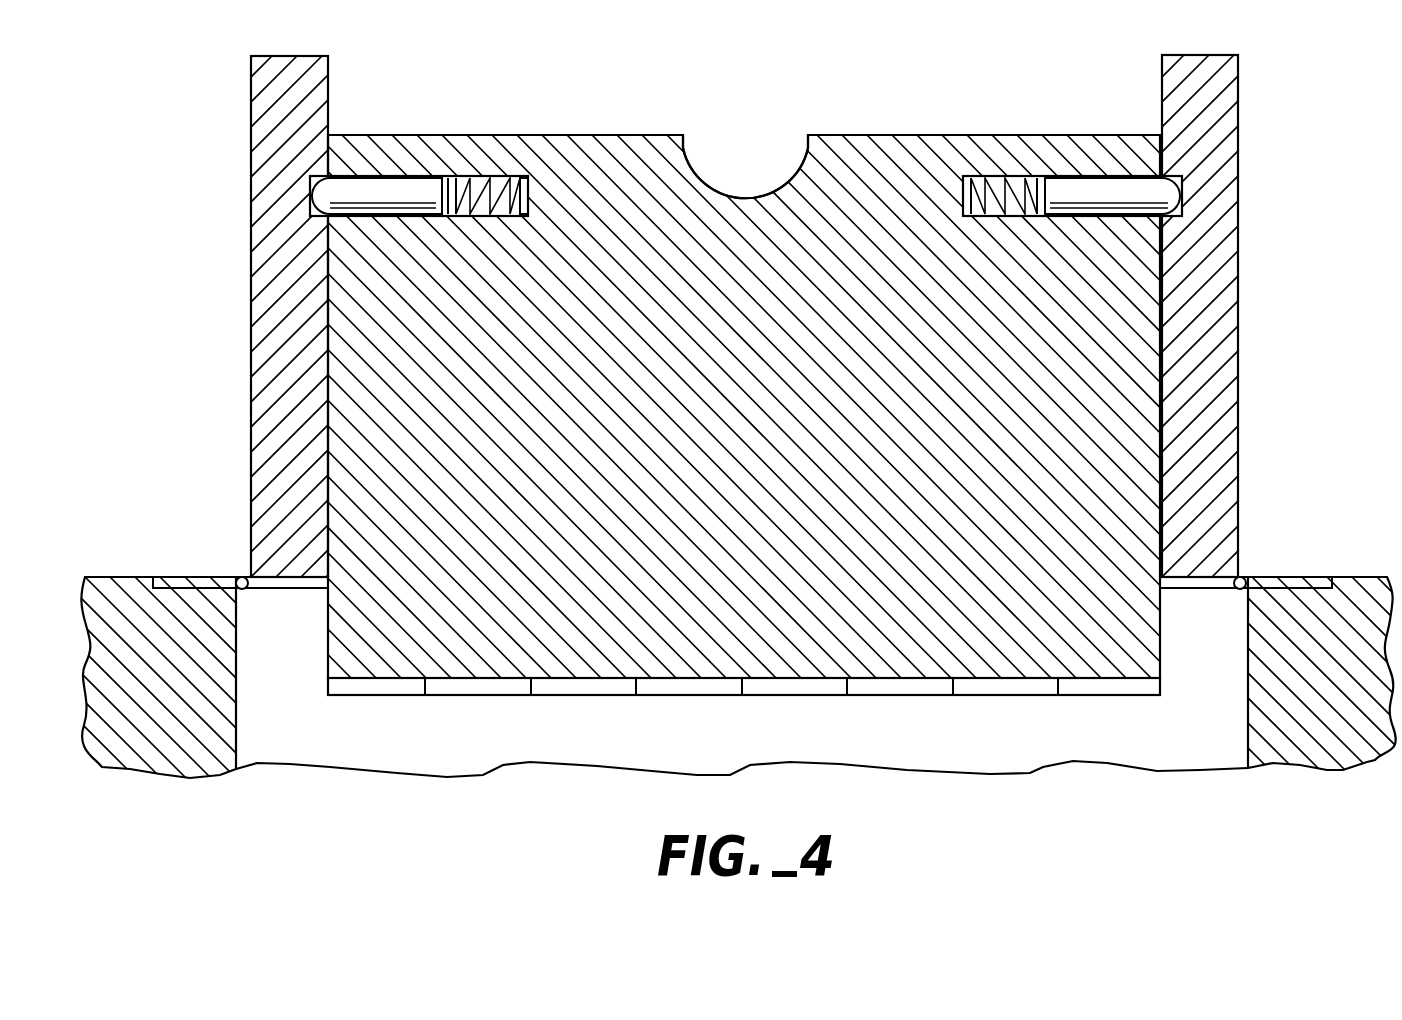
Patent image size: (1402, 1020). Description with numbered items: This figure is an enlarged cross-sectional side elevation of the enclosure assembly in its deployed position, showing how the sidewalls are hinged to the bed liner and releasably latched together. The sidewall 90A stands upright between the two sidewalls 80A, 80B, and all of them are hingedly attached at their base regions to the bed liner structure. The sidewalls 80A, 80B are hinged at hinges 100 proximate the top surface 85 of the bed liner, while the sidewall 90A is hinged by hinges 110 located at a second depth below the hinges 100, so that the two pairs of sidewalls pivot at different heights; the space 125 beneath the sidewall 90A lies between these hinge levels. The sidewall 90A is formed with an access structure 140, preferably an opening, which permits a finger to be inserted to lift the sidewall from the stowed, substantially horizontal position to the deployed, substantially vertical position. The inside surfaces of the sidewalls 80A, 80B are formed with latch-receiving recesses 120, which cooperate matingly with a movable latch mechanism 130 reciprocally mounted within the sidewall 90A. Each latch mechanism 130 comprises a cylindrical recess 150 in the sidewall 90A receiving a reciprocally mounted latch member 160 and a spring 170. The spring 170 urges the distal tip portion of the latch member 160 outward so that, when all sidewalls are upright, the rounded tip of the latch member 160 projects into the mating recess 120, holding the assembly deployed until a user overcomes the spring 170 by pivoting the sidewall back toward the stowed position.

The sidewall 80A is at (1240, 105).
The sidewall 80B is at (251, 108).
The top surface 85 is at (146, 577).
The sidewall 90A is at (918, 128).
The hinges 100 is at (243, 577).
The hinges 110 is at (897, 695).
The latch-receiving recess 120 is at (318, 182).
The gap 125 is at (280, 737).
The latch mechanism 130 is at (362, 156).
The access structure 140 is at (722, 193).
The cylindrical recess 150 is at (470, 176).
The latch member 160 is at (355, 197).
The spring 170 is at (528, 195).